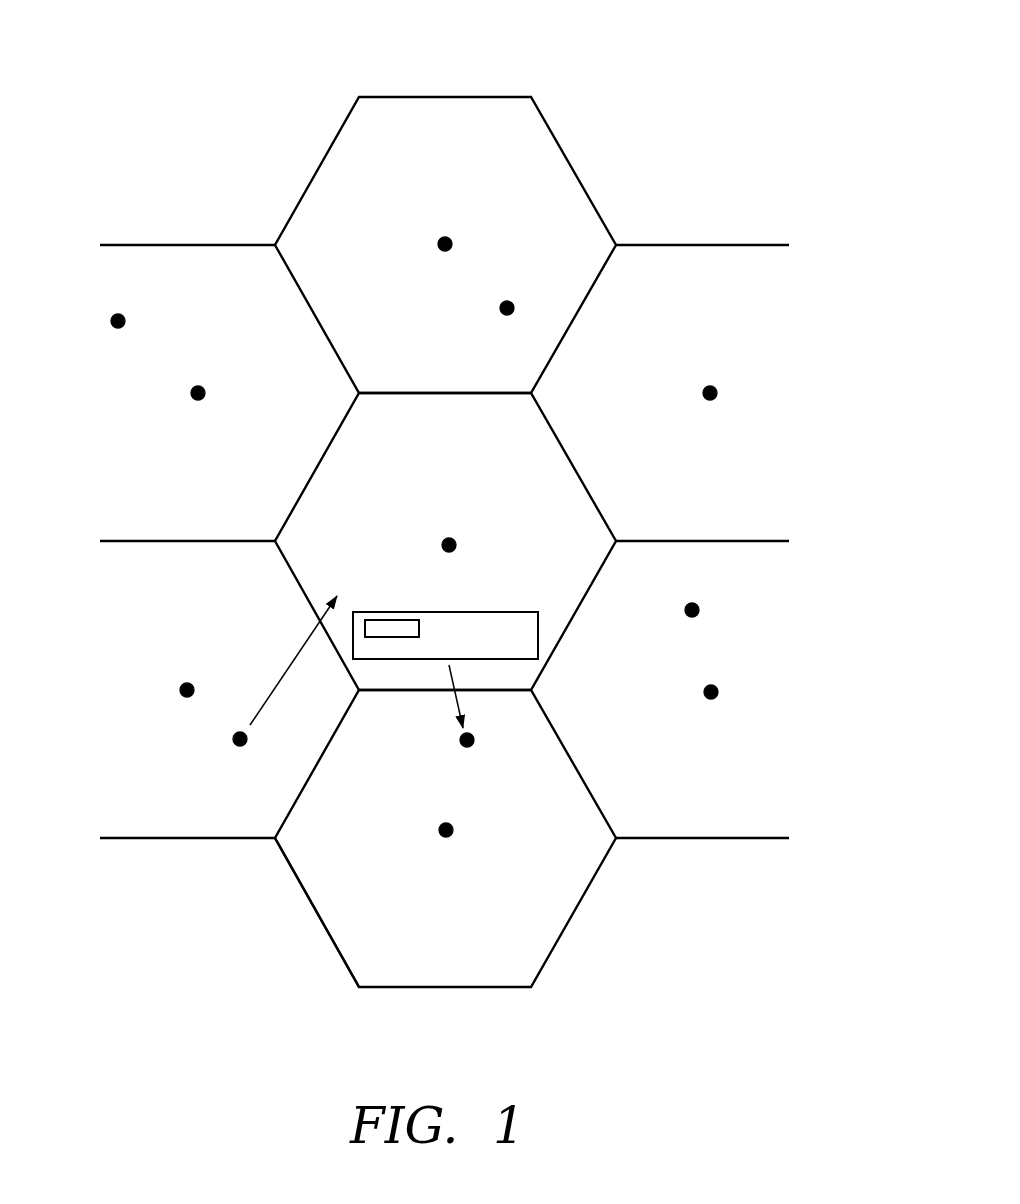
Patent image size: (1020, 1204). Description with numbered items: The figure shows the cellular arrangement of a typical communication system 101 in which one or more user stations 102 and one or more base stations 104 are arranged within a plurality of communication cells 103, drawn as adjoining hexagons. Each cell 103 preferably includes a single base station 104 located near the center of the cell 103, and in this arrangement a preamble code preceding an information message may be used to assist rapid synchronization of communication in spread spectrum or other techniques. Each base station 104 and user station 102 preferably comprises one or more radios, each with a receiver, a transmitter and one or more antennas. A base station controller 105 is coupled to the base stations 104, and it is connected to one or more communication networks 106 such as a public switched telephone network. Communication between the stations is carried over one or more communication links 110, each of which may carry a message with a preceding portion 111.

The communication system 101 is at (573, 107).
The user station 102 is at (514, 306).
The communication cell 103 is at (507, 145).
The base station 104 is at (452, 242).
The base station controller 105 is at (125, 319).
The communication network 106 is at (320, 883).
The communication link 110 is at (514, 612).
The header field 111 is at (380, 620).